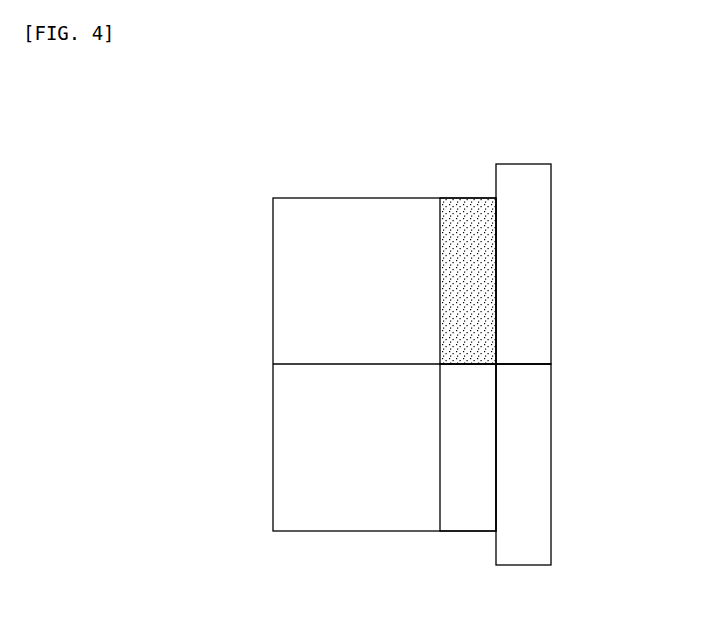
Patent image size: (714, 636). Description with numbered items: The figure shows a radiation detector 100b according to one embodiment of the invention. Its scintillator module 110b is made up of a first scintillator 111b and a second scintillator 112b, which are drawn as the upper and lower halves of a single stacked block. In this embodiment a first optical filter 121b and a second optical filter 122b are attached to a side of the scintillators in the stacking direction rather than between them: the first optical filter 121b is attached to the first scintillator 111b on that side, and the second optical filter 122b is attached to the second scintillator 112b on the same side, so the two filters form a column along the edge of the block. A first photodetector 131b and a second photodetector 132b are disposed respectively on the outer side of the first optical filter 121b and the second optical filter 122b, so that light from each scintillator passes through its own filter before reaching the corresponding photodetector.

The radiation detector 100b is at (572, 147).
The scintillator module 110b is at (188, 290).
The first scintillator 111b is at (308, 292).
The second scintillator 112b is at (308, 456).
The first optical filter 121b is at (468, 198).
The second optical filter 122b is at (470, 531).
The first photodetector 131b is at (525, 268).
The second photodetector 132b is at (525, 430).